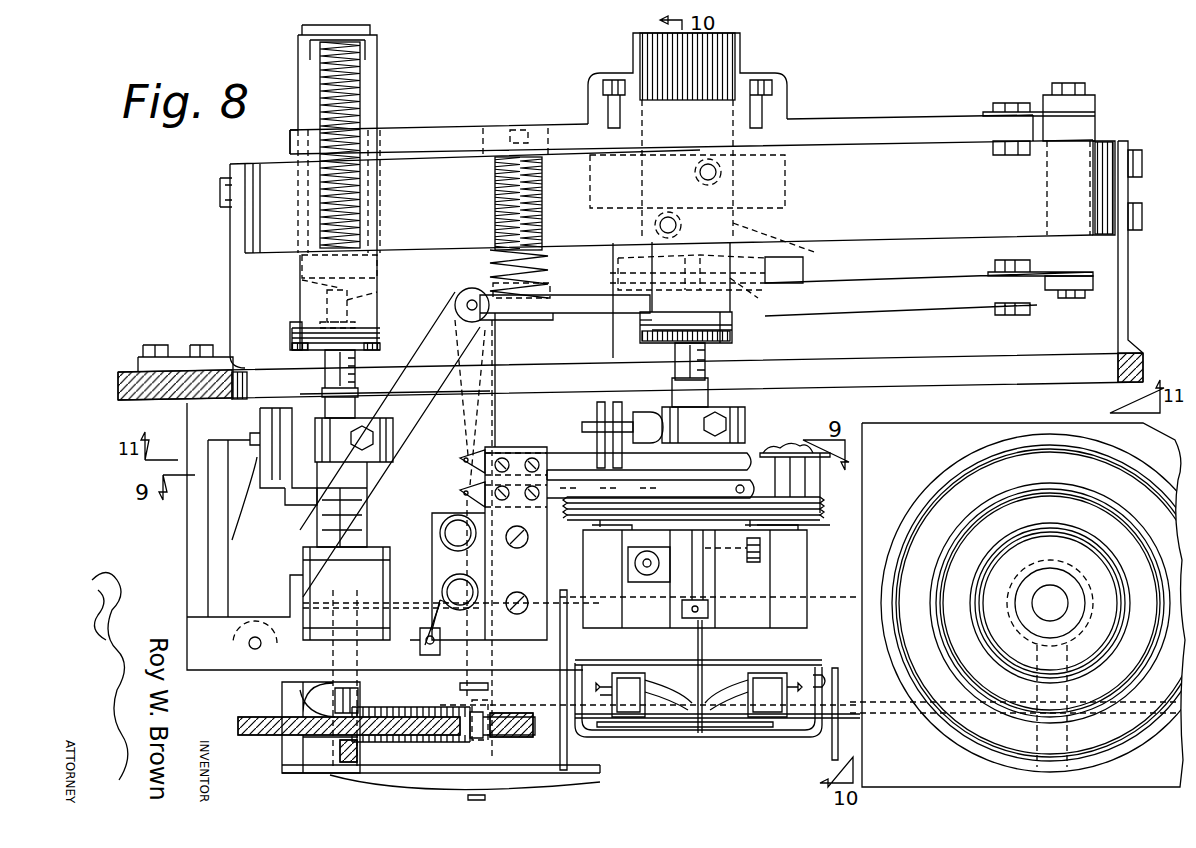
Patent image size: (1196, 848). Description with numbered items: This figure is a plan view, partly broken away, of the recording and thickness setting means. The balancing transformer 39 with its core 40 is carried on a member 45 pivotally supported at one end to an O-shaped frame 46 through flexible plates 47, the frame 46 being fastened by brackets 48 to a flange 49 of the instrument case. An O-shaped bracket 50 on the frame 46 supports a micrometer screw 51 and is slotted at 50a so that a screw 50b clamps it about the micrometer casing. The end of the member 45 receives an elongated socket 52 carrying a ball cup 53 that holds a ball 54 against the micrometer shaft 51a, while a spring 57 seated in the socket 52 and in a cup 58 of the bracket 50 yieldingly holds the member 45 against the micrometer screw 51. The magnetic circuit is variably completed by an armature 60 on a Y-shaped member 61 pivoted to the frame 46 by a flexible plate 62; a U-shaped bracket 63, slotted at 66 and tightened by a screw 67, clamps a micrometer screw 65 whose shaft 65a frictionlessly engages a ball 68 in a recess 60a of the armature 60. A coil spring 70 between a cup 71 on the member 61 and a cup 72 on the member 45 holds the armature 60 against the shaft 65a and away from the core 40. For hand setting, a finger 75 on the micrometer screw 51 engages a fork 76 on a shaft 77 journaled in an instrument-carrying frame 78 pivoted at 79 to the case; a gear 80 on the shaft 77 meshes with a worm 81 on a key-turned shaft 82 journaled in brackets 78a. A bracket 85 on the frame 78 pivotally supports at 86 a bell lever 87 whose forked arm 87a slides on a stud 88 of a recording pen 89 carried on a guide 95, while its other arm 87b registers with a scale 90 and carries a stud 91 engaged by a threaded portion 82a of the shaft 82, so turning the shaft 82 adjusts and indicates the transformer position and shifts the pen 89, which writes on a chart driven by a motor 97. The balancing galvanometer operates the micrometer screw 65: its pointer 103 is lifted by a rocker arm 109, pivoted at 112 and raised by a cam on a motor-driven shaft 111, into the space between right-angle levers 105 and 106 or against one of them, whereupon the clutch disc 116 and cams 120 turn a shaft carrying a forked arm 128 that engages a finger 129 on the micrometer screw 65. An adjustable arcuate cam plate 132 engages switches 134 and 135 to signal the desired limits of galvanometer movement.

The balancing transformer 39 is at (787, 80).
The core 40 is at (787, 250).
The member 45 is at (447, 140).
The O-shaped frame 46 is at (1110, 140).
The flexible plates 47 is at (1035, 112).
The brackets 48 is at (215, 284).
The flange 49 is at (117, 387).
The O-shaped bracket 50 is at (370, 102).
The slot 50a is at (300, 330).
The screw 50b is at (292, 340).
The micrometer screw 51 is at (358, 373).
The micrometer shaft 51a is at (377, 292).
The elongated socket 52 is at (377, 268).
The ball cup 53 is at (302, 280).
The ball 54 is at (327, 292).
The spring 57 is at (360, 195).
The cup 58 is at (365, 52).
The armature 60 is at (740, 262).
The recess 60a is at (758, 298).
The Y-shaped member 61 is at (933, 300).
The flexible plate 62 is at (1045, 283).
The U-shaped bracket 63 is at (720, 325).
The micrometer screw 65 is at (700, 400).
The micrometer shaft 65a is at (618, 272).
The slot 66 is at (675, 350).
The screw 67 is at (640, 322).
The ball 68 is at (785, 270).
The coil spring 70 is at (548, 262).
The cup 71 is at (545, 295).
The cup 72 is at (510, 140).
The finger 75 is at (315, 430).
The fork 76 is at (260, 428).
The shaft 77 is at (365, 592).
The instrument-carrying frame 78 is at (280, 622).
The brackets 78a is at (282, 770).
The pivot 79 is at (252, 650).
The gear 80 is at (267, 735).
The worm 81 is at (340, 757).
The shaft 82 is at (338, 763).
The threaded portion 82a is at (535, 738).
The bracket 85 is at (317, 536).
The pivot 86 is at (470, 290).
The bell lever 87 is at (485, 342).
The forked arm 87a is at (437, 508).
The pointer arm 87b is at (472, 688).
The stud 88 is at (420, 650).
The recording pen 89 is at (445, 645).
The scale 90 is at (520, 790).
The stud 91 is at (472, 745).
The guide 95 is at (425, 636).
The motor 97 is at (965, 730).
The galvanometer pointer 103 is at (672, 690).
The right-angle lever 105 is at (700, 735).
The right-angle lever 106 is at (670, 735).
The rocker arm 109 is at (620, 730).
The motor-driven shaft 111 is at (790, 740).
The pivot 112 is at (567, 590).
The clutch disc 116 is at (660, 685).
The cams 120 is at (567, 700).
The forked arm 128 is at (585, 412).
The finger 129 is at (633, 427).
The arcuate cam plate 132 is at (817, 470).
The switch 134 is at (484, 460).
The switch 135 is at (544, 485).